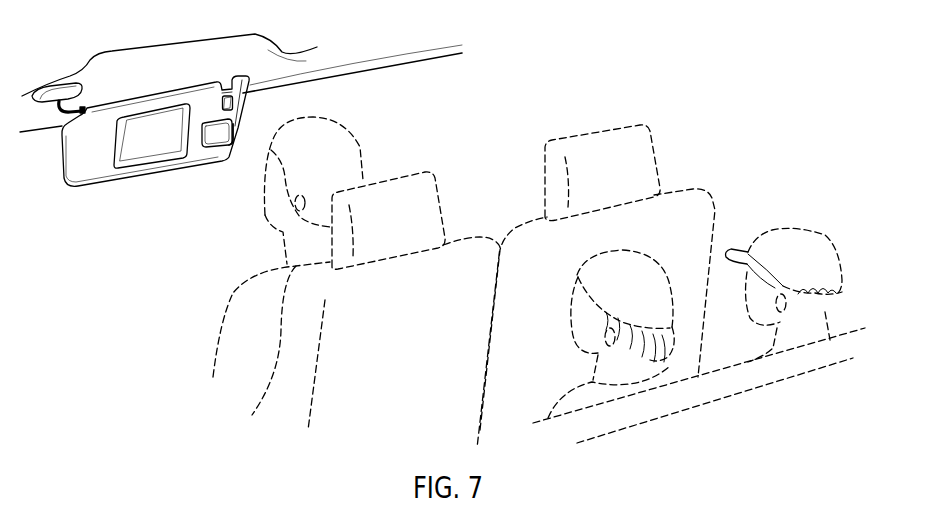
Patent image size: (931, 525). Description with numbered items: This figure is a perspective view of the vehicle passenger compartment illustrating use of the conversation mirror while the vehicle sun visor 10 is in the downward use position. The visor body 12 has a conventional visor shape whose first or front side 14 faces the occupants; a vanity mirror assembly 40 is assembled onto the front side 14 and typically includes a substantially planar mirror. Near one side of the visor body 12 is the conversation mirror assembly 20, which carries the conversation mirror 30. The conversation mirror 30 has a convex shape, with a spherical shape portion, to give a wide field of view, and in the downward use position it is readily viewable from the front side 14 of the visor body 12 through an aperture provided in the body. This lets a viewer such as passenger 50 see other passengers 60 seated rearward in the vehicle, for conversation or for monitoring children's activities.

The vehicle sun visor 10 is at (183, 142).
The visor body 12 is at (155, 103).
The first or front side 14 is at (97, 167).
The conversation mirror assembly 20 is at (238, 124).
The conversation mirror 30 is at (214, 134).
The vanity mirror assembly 40 is at (150, 147).
The passenger 50 is at (333, 120).
The other passengers 60 is at (641, 251).